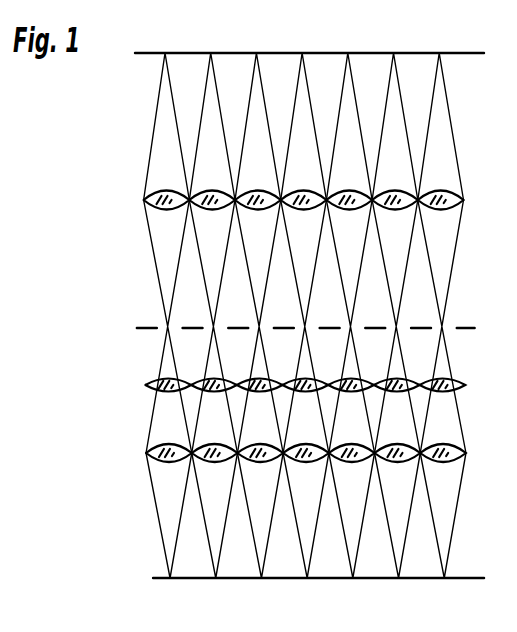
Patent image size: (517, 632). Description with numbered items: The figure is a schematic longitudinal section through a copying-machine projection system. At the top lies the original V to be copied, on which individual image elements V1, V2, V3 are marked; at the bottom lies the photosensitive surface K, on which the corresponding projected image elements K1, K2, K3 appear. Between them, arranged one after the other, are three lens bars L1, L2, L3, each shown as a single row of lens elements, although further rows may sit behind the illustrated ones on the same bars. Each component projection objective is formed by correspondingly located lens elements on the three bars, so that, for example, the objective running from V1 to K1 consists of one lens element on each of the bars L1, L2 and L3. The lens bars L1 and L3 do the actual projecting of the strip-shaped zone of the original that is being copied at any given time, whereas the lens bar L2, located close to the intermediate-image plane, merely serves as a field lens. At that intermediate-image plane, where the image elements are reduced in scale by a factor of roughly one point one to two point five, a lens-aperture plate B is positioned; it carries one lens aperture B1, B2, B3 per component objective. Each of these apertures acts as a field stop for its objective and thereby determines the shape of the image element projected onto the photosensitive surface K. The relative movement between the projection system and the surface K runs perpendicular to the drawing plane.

The original V is at (448, 52).
The image element on the original V1 is at (163, 52).
The image element on the original V2 is at (209, 52).
The image element on the original V3 is at (255, 52).
The lens bar L1 is at (462, 199).
The lens bar L2 is at (462, 385).
The lens bar L3 is at (462, 453).
The lens-aperture plate B is at (460, 328).
The lens aperture B1 is at (160, 326).
The lens aperture B2 is at (207, 326).
The lens aperture B3 is at (253, 326).
The photosensitive surface K is at (458, 578).
The image element on the photosensitive surface K1 is at (157, 581).
The image element on the photosensitive surface K2 is at (203, 581).
The image element on the photosensitive surface K3 is at (249, 581).